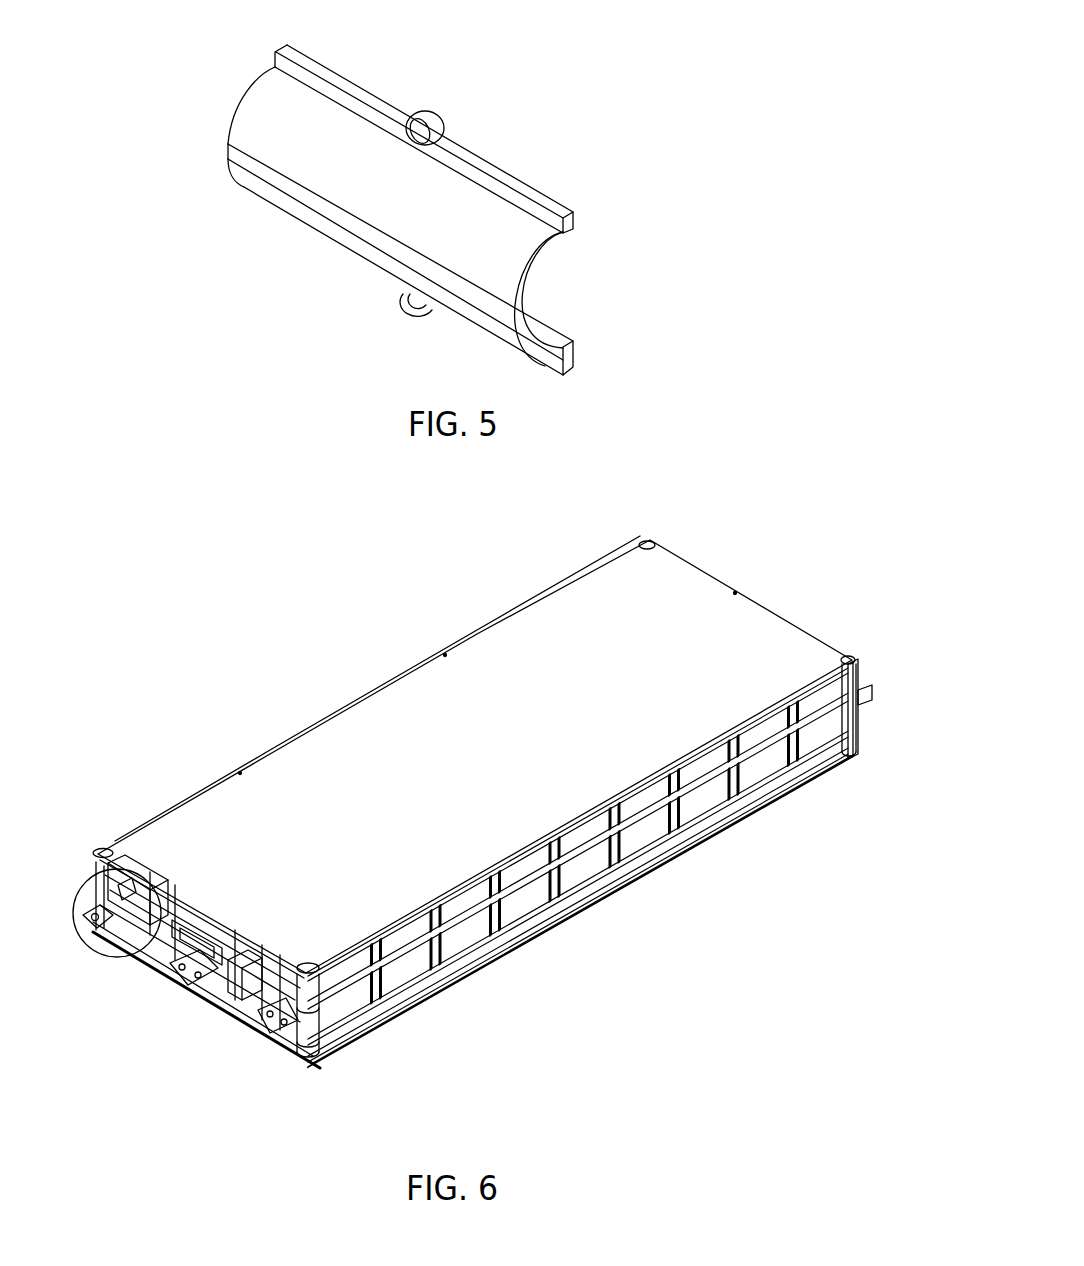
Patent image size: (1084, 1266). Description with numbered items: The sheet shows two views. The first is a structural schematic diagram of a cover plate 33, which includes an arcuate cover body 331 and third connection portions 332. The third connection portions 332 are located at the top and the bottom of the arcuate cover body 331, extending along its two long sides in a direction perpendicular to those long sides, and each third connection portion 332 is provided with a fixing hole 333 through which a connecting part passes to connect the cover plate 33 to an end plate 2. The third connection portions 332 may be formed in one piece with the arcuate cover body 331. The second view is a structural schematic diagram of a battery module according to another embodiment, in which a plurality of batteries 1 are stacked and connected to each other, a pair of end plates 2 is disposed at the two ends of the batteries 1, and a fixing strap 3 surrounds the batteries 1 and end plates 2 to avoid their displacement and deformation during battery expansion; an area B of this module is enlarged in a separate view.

In FIG. 5, the cover plate 33 is at (401, 57).
In FIG. 5, the arcuate cover body 331 is at (507, 260).
In FIG. 5, the third connection portion 332 is at (525, 183).
In FIG. 5, the fixing hole 333 is at (443, 132).
In FIG. 6, the battery 1 is at (506, 926).
In FIG. 6, the end plate 2 is at (213, 1005).
In FIG. 6, the fixing strap 3 is at (372, 968).
In FIG. 6, the area B is at (88, 943).